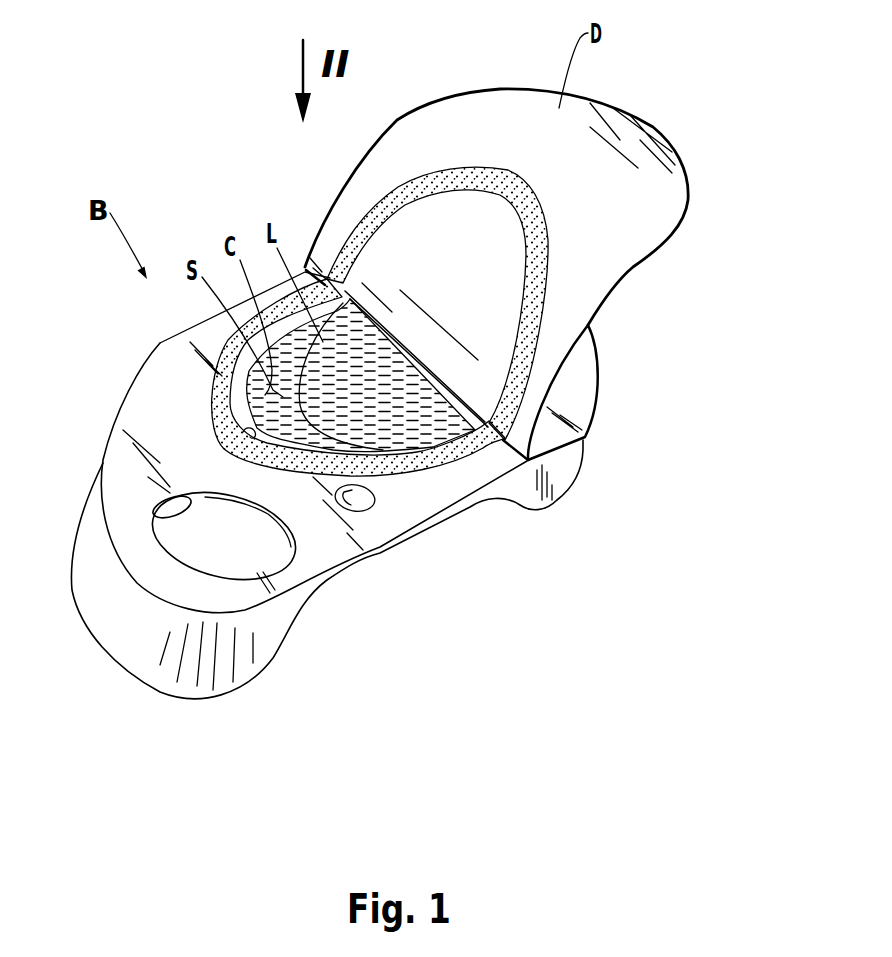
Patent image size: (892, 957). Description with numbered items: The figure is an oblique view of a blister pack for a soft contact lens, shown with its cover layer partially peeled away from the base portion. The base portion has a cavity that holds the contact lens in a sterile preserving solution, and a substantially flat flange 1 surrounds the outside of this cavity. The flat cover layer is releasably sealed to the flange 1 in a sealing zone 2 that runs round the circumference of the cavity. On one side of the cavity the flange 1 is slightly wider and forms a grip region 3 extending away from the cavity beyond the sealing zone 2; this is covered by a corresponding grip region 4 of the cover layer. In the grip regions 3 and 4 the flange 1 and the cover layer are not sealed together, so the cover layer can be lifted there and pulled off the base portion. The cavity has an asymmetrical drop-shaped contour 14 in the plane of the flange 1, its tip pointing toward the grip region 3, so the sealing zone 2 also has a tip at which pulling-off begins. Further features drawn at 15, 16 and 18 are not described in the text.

The flange 1 is at (150, 418).
The sealing zone 2 is at (447, 462).
The grip region 3 is at (220, 595).
The grip region 4 is at (653, 193).
The drop-shaped contour 14 is at (247, 432).
The hook 15 is at (153, 512).
The front wall 16 is at (207, 677).
The rear wall 18 is at (567, 473).